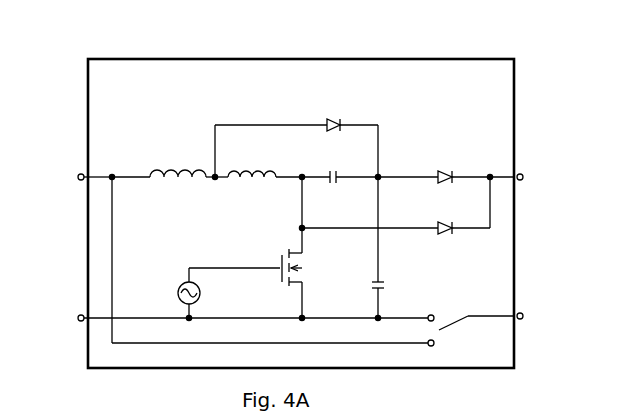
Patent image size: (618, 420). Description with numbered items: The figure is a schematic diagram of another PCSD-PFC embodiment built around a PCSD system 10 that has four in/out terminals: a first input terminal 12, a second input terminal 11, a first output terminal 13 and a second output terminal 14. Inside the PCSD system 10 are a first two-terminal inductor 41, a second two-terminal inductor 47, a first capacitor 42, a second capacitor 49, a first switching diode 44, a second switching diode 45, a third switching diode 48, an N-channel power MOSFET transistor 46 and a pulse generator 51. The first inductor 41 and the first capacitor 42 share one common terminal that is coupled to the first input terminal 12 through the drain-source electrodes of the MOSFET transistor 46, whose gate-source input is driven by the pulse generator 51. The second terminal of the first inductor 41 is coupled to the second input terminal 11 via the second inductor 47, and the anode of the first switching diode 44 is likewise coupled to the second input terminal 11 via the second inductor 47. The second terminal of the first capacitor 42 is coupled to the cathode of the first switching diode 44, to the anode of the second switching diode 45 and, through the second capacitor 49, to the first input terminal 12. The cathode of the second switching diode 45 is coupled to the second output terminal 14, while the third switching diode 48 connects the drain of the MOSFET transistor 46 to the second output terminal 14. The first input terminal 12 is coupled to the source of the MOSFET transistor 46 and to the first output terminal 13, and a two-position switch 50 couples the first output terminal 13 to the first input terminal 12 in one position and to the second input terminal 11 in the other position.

The PCSD System 10 is at (96, 55).
The second input terminal Vin1 11 is at (79, 195).
The first input terminal Vin0 12 is at (80, 337).
The first output terminal Vout0 13 is at (540, 334).
The second output terminal Vout1 14 is at (540, 194).
The first two-terminal inductor L1 41 is at (283, 168).
The first capacitor C1 42 is at (331, 168).
The first switching diode D1 44 is at (356, 115).
The second switching diode D2 45 is at (428, 173).
The N-channel power MOSFET transistor Q1 46 is at (278, 254).
The second two-terminal inductor L2 47 is at (152, 164).
The third switching diode D3 48 is at (436, 221).
The second capacitor C2 49 is at (369, 277).
The two-position switch SW4 50 is at (468, 294).
The pulse generator Gps 51 is at (178, 267).